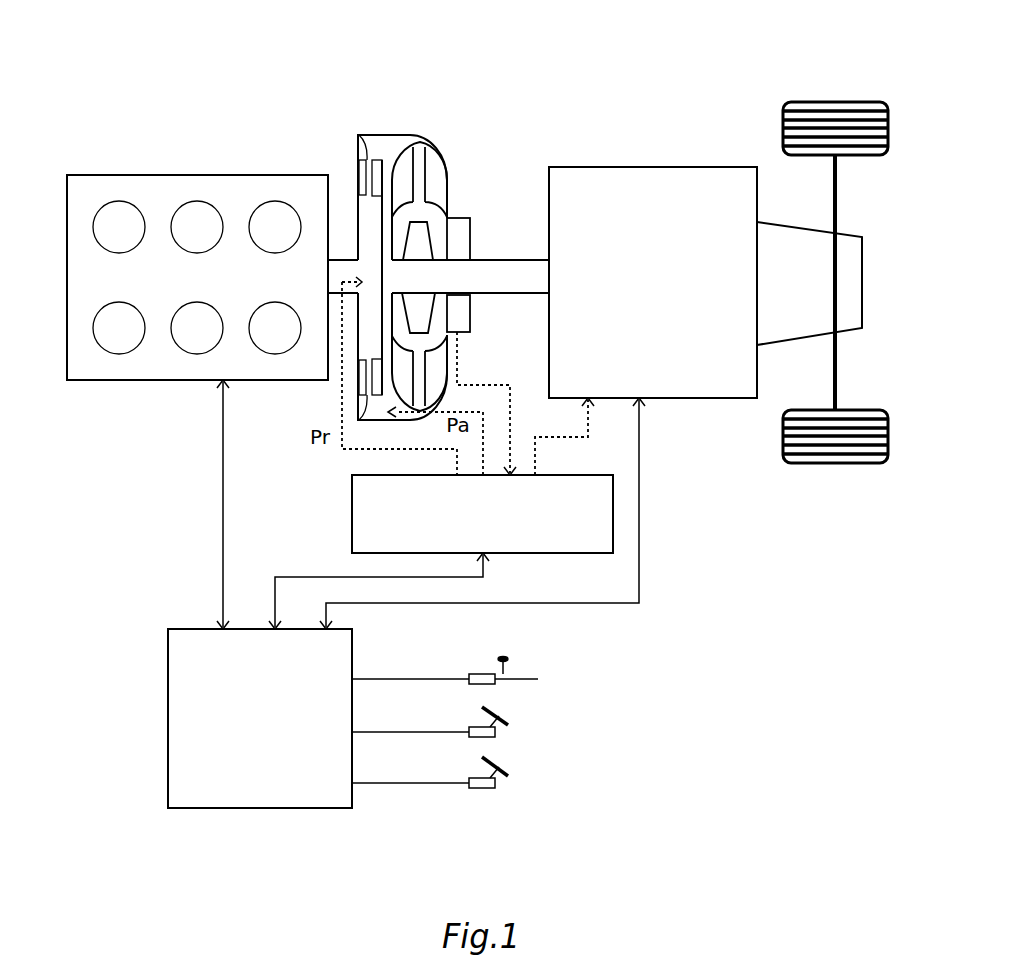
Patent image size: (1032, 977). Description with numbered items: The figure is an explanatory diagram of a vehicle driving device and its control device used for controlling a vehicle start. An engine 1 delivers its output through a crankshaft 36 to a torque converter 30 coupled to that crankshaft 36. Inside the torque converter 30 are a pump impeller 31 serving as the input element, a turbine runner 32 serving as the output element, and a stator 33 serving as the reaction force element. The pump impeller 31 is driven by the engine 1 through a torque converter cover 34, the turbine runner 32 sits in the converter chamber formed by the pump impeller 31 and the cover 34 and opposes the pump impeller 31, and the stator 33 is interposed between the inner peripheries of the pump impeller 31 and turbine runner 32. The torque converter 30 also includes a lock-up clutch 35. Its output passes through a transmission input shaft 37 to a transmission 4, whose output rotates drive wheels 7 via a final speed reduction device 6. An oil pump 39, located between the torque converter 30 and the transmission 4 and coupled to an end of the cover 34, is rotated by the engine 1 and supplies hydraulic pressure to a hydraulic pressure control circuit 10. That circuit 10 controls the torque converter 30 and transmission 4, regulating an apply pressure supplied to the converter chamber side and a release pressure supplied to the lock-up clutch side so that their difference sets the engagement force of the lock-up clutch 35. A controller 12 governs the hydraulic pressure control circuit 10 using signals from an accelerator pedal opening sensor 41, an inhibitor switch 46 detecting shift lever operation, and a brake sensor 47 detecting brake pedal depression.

The engine 1 is at (275, 175).
The transmission 4 is at (627, 167).
The final speed reduction device 6 is at (792, 222).
The drive wheels 7 is at (835, 101).
The hydraulic pressure control circuit 10 is at (352, 505).
The controller 12 is at (195, 629).
The torque converter 30 is at (419, 220).
The pump impeller 31 is at (447, 183).
The turbine runner 32 is at (421, 146).
The stator 33 is at (427, 223).
The torque converter cover 34 is at (395, 137).
The lock-up clutch 35 is at (361, 140).
The crankshaft 36 is at (345, 258).
The transmission input shaft 37 is at (527, 293).
The oil pump 39 is at (470, 317).
The accelerator pedal opening sensor 41 is at (495, 733).
The inhibitor switch 46 is at (485, 672).
The brake sensor 47 is at (495, 786).